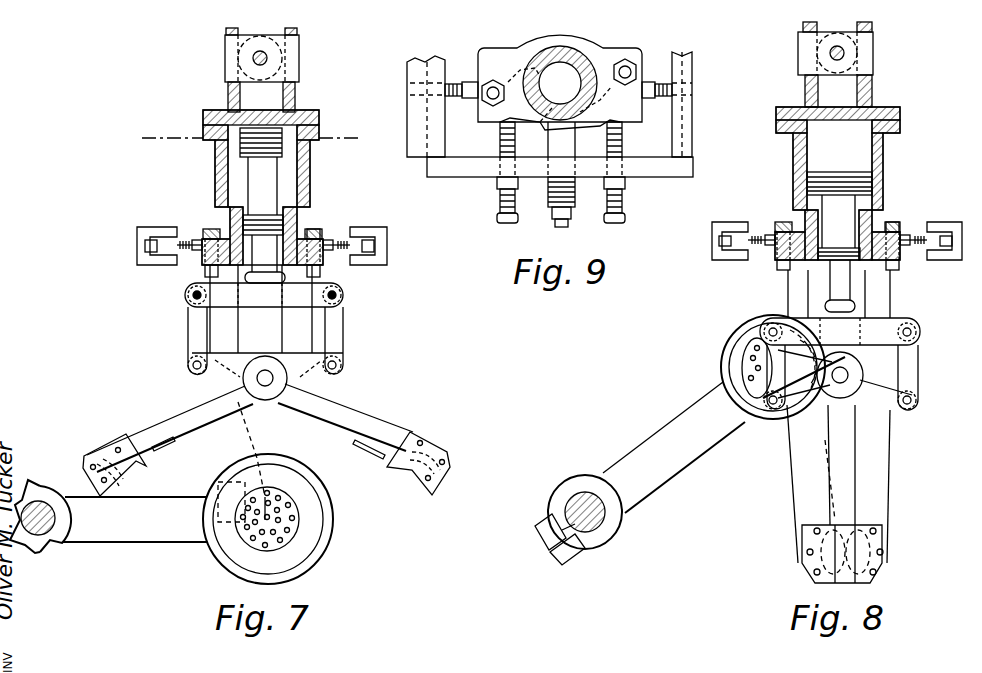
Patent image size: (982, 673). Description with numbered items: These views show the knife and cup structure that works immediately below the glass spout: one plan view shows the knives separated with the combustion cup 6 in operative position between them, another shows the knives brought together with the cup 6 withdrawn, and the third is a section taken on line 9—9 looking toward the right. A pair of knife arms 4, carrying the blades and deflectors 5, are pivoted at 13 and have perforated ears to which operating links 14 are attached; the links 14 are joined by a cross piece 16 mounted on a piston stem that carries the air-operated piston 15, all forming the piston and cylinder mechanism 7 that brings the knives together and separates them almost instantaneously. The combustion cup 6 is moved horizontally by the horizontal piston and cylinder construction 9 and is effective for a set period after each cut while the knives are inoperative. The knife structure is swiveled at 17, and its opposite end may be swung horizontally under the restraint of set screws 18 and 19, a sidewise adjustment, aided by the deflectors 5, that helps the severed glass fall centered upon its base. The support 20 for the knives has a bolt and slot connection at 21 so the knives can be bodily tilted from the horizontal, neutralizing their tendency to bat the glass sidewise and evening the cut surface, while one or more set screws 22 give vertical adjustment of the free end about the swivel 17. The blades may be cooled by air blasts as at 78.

In FIG. 7, the knife arms 4 is at (190, 394).
In FIG. 8, the knife arms 4 is at (808, 462).
In FIG. 7, the deflectors 5 is at (95, 450).
In FIG. 8, the deflectors 5 is at (805, 570).
In FIG. 7, the combustion cup 6 is at (215, 558).
In FIG. 8, the combustion cup 6 is at (722, 362).
In FIG. 7, the piston and cylinder mechanism 7 is at (215, 158).
In FIG. 8, the piston and cylinder mechanism 7 is at (883, 156).
In FIG. 7, the horizontal piston and cylinder construction 9 is at (249, 139).
In FIG. 7, the pivot 13 is at (265, 386).
In FIG. 8, the pivot 13 is at (850, 374).
In FIG. 7, the operating links 14 is at (188, 334).
In FIG. 8, the operating links 14 is at (770, 358).
In FIG. 7, the piston 15 is at (259, 180).
In FIG. 8, the piston 15 is at (870, 200).
In FIG. 7, the cross piece 16 is at (343, 298).
In FIG. 8, the cross piece 16 is at (880, 322).
In FIG. 7, the swivel 17 is at (268, 52).
In FIG. 8, the swivel 17 is at (846, 48).
In FIG. 7, the set screw 18 is at (338, 252).
In FIG. 9, the set screw 18 is at (456, 80).
In FIG. 8, the set screw 18 is at (922, 238).
In FIG. 7, the set screw 19 is at (181, 240).
In FIG. 9, the set screw 19 is at (664, 82).
In FIG. 8, the set screw 19 is at (758, 236).
In FIG. 7, the support 20 is at (212, 264).
In FIG. 8, the support 20 is at (895, 262).
In FIG. 7, the bolt and slot connection 21 is at (318, 236).
In FIG. 9, the bolt and slot connection 21 is at (604, 60).
In FIG. 8, the bolt and slot connection 21 is at (896, 228).
In FIG. 9, the set screws 22 is at (500, 140).
In FIG. 7, the air blasts 78 is at (168, 443).